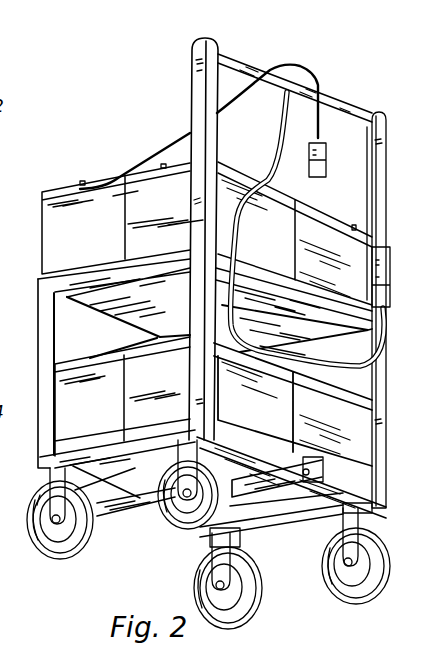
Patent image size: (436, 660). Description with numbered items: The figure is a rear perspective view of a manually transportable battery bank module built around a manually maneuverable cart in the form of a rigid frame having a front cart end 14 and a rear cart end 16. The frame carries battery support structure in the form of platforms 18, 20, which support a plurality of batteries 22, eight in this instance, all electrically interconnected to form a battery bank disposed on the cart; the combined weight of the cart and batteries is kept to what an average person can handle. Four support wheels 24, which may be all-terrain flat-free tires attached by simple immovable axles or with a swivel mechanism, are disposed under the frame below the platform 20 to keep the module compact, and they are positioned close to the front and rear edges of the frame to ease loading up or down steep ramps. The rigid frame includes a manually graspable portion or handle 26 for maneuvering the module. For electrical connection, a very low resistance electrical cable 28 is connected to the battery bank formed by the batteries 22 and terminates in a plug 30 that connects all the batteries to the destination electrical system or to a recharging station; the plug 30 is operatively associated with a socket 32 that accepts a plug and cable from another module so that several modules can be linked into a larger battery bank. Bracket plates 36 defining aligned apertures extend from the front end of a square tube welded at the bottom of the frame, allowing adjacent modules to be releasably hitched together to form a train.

The front cart end 14 is at (43, 332).
The rear cart end 16 is at (382, 470).
The platform 18 is at (95, 315).
The platform 20 is at (117, 452).
The batteries 22 is at (65, 202).
The support wheels 24 is at (237, 613).
The handle 26 is at (242, 63).
The electrical cable 28 is at (289, 66).
The plug 30 is at (327, 153).
The socket 32 is at (388, 262).
The bracket plates 36 is at (283, 490).